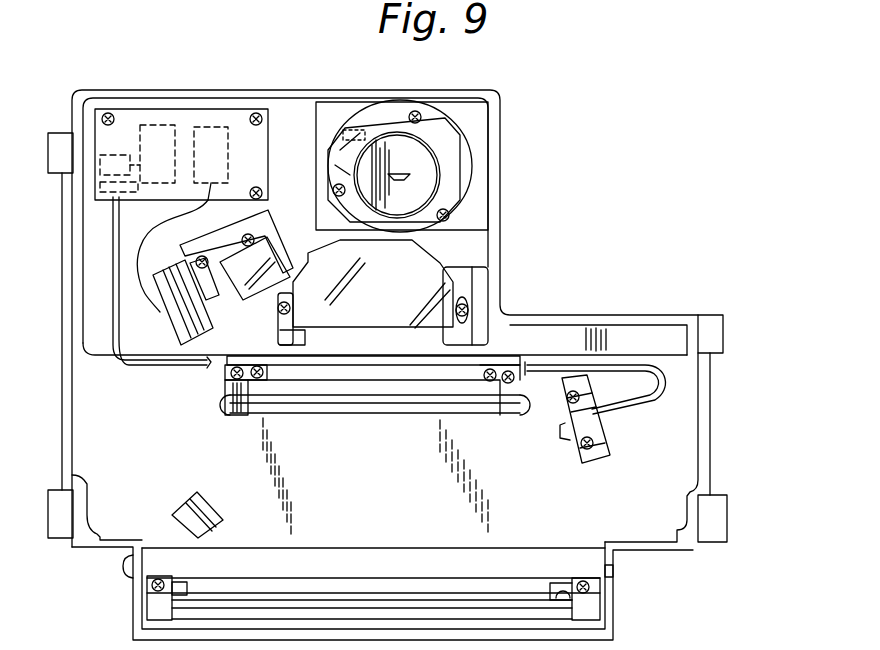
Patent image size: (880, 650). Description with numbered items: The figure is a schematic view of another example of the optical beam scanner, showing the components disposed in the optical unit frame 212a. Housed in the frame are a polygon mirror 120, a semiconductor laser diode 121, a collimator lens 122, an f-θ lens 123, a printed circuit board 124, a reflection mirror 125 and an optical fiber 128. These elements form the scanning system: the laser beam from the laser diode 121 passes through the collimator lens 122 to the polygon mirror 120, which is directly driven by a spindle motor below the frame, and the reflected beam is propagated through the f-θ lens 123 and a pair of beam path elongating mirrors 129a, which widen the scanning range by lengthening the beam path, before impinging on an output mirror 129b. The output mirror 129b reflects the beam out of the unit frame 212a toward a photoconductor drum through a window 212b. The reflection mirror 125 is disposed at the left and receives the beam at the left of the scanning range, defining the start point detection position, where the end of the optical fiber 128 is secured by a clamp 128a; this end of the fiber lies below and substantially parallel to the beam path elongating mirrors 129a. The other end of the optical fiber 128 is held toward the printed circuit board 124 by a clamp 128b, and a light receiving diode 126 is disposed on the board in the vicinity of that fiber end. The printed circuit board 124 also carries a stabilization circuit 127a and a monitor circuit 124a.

The polygon mirror 120 is at (443, 158).
The semiconductor laser diode 121 is at (173, 313).
The collimator lens 122 is at (252, 290).
The f-θ lens 123 is at (433, 315).
The printed circuit board 124 is at (203, 173).
The monitor circuit 124a is at (228, 130).
The reflection mirror 125 is at (192, 497).
The light receiving diode 126 is at (113, 160).
The stabilization circuit 127a is at (180, 130).
The optical fiber 128 is at (143, 371).
The clamp 128a is at (597, 432).
The clamp 128b is at (136, 186).
The pair of beam path elongating mirrors 129a is at (505, 418).
The output mirror 129b is at (530, 580).
The optical unit frame 212a is at (500, 160).
The window 212b is at (570, 558).